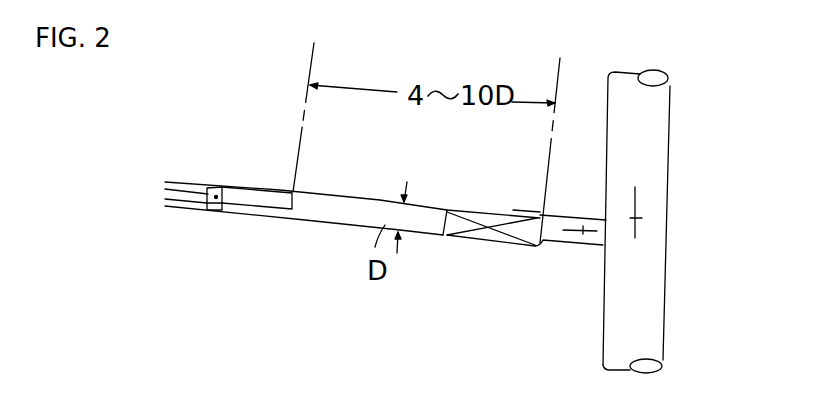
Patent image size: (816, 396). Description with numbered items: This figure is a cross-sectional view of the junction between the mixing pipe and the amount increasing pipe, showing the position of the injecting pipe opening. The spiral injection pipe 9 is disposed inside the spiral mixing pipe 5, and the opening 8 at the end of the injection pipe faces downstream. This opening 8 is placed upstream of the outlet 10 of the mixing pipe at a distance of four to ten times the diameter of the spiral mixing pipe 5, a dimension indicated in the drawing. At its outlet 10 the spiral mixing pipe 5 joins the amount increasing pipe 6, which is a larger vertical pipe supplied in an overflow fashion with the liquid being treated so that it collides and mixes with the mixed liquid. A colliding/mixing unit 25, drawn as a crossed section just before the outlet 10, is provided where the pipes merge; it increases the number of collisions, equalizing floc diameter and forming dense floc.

The spiral mixing pipe 5 is at (327, 197).
The amount increasing pipe 6 is at (660, 157).
The opening 8 is at (292, 208).
The spiral injection pipe 9 is at (232, 200).
The outlet 10 is at (543, 243).
The colliding/mixing unit 25 is at (468, 235).